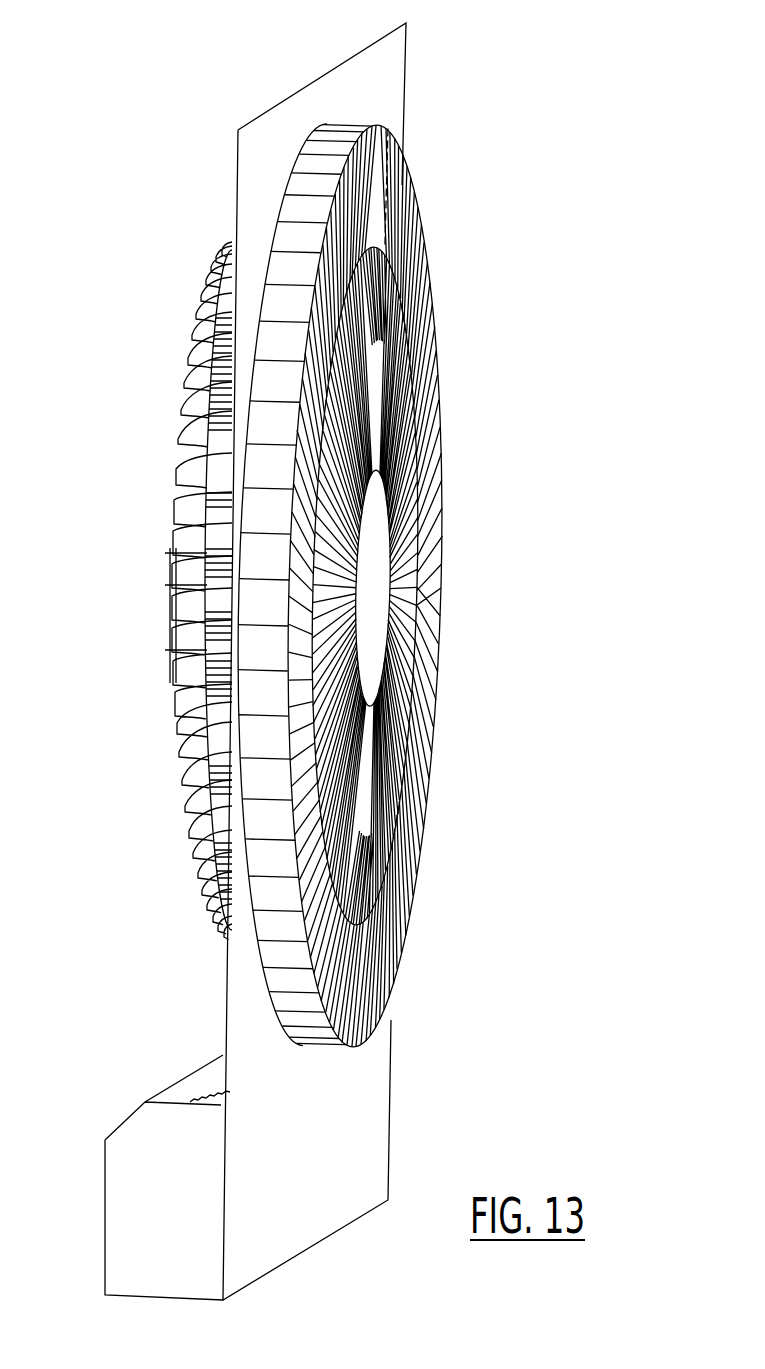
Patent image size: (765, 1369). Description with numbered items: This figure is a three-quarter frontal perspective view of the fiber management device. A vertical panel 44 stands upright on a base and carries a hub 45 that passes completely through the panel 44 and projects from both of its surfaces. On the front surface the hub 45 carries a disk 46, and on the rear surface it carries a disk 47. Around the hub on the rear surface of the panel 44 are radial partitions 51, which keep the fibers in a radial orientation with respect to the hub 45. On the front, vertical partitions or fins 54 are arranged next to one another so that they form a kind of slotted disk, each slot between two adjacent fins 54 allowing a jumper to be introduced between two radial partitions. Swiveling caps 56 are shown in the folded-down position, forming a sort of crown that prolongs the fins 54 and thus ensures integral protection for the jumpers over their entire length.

The vertical panel 44 is at (370, 1095).
The hub 45 is at (200, 580).
The disk 46 is at (382, 558).
The disk 47 is at (168, 598).
The radial partitions 51 is at (180, 637).
The fins 54 is at (403, 617).
The swiveling caps 56 is at (363, 118).